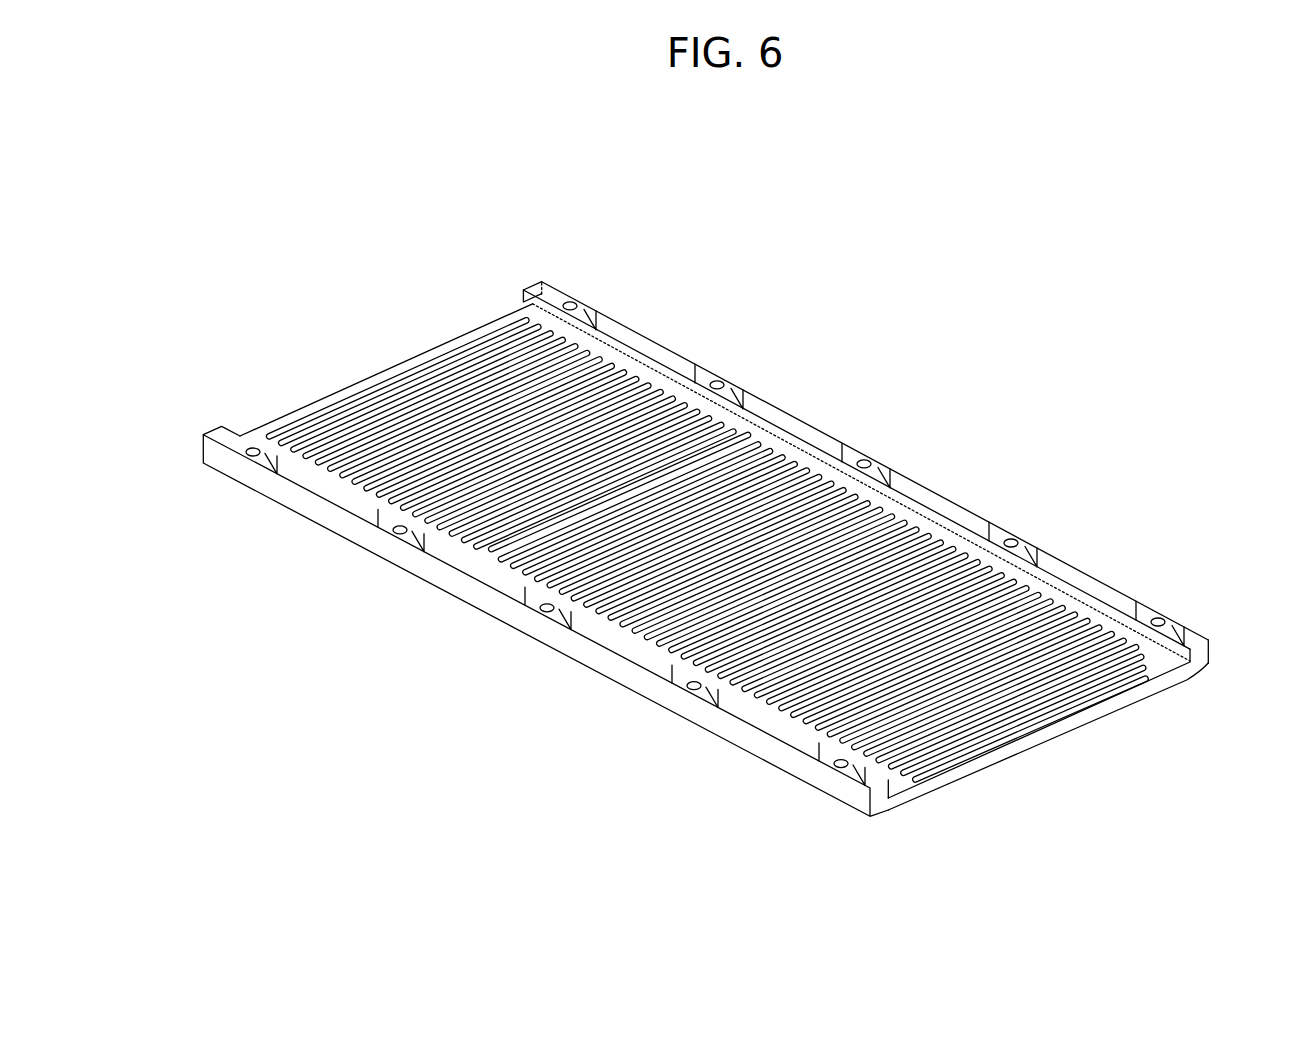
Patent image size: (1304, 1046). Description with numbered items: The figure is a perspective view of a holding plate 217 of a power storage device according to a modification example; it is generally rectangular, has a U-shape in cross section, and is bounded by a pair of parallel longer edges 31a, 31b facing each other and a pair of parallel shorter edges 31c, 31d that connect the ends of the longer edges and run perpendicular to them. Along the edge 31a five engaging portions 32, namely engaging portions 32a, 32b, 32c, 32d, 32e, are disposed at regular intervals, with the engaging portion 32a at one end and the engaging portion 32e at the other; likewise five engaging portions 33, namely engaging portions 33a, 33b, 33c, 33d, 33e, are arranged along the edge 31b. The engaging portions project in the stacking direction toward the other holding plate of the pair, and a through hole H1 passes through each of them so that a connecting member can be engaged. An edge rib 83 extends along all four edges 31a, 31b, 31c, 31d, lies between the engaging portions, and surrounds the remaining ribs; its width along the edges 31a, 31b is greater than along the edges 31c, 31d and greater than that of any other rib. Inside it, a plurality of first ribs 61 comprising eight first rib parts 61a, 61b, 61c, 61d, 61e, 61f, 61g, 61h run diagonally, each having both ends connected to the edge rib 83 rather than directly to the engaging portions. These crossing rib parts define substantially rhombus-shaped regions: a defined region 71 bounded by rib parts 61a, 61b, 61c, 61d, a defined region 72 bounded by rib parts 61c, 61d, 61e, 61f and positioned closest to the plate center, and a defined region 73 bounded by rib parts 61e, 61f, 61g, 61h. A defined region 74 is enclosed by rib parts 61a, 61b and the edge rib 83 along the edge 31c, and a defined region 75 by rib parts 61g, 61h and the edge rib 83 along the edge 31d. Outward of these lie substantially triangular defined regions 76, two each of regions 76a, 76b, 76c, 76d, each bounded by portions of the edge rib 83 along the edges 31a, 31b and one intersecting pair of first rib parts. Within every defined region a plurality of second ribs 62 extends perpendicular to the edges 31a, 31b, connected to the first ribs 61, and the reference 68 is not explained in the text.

The holding plate 217 is at (991, 344).
The edge 31a is at (650, 340).
The edge 31b is at (290, 480).
The edge 31c is at (388, 368).
The edge 31d is at (1045, 725).
The engaging portions 32 is at (909, 431).
The engaging portion 32a is at (572, 298).
The engaging portion 32b is at (745, 385).
The engaging portion 32c is at (882, 470).
The engaging portion 32d is at (1035, 555).
The engaging portion 32e is at (1182, 625).
The engaging portions 33 is at (523, 655).
The engaging portion 33a is at (240, 456).
The engaging portion 33b is at (380, 532).
The engaging portion 33c is at (540, 616).
The engaging portion 33d is at (690, 692).
The engaging portion 33e is at (840, 782).
The first ribs 61 is at (735, 503).
The first rib part 61a is at (540, 365).
The first rib part 61b is at (625, 395).
The first rib part 61c is at (730, 455).
The first rib part 61d is at (790, 480).
The first rib part 61e is at (865, 535).
The first rib part 61f is at (925, 550).
The first rib part 61g is at (1000, 610).
The first rib part 61h is at (1075, 660).
The second ribs 62 is at (475, 600).
The slit 68 is at (352, 380).
The defined region 71 is at (470, 566).
The defined region 72 is at (615, 626).
The defined region 73 is at (770, 702).
The defined region 74 is at (478, 365).
The defined region 75 is at (958, 762).
The defined regions 76 is at (622, 616).
The defined regions 76a is at (395, 497).
The defined regions 76b is at (572, 632).
The defined regions 76c is at (725, 662).
The defined regions 76d is at (800, 702).
The edge rib 83 is at (460, 335).
The through hole H1 is at (722, 382).